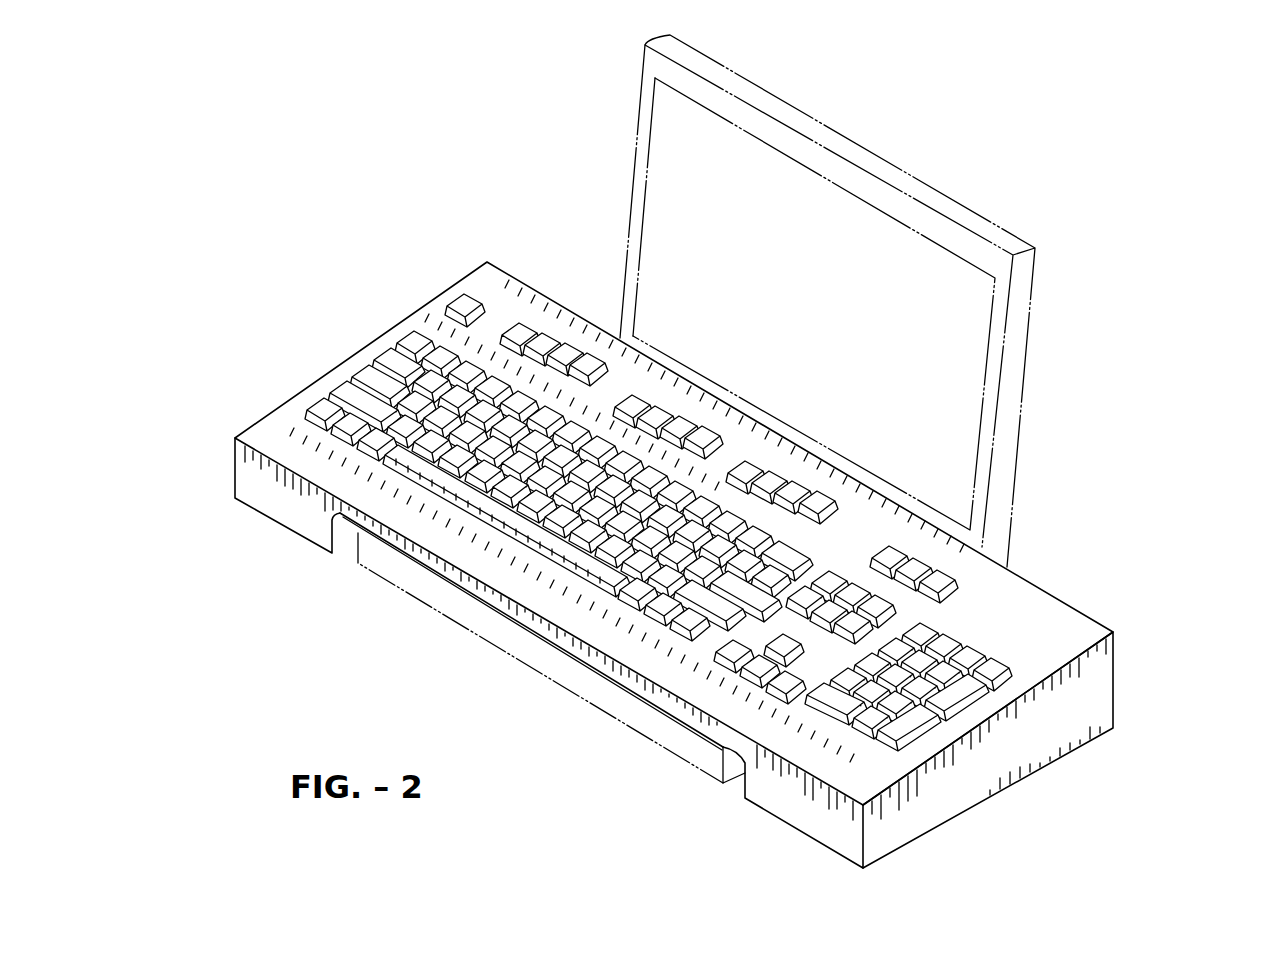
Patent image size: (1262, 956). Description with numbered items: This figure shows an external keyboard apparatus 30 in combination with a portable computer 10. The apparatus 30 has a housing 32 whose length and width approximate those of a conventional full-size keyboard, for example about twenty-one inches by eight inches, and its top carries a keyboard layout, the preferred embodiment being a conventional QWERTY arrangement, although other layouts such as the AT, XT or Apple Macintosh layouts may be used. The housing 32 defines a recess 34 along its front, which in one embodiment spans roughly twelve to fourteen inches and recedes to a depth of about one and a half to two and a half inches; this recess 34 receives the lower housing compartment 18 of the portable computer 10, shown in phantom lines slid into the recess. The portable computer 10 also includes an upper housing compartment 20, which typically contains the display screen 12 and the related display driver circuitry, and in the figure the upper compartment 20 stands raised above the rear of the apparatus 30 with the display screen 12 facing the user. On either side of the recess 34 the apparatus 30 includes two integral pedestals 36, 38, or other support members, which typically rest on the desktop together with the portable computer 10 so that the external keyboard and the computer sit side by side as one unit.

The portable computer 10 is at (1047, 160).
The display screen 12 is at (771, 263).
The lower housing compartment 18 is at (602, 713).
The upper housing compartment 20 is at (622, 206).
The external keyboard apparatus 30 is at (1165, 602).
The housing 32 is at (1116, 673).
The recess 34 is at (346, 562).
The pedestal 36 is at (282, 527).
The pedestal 38 is at (802, 832).